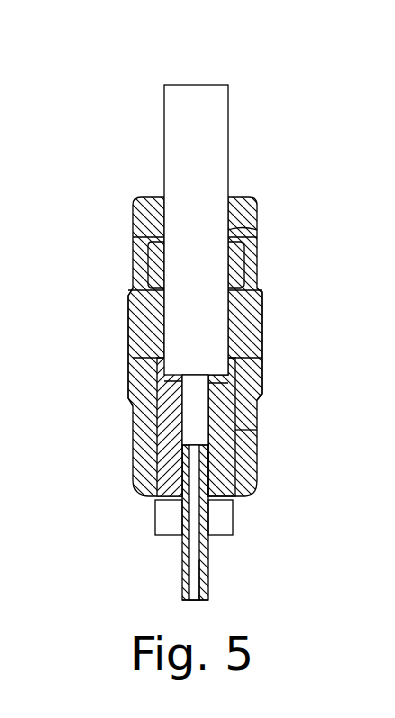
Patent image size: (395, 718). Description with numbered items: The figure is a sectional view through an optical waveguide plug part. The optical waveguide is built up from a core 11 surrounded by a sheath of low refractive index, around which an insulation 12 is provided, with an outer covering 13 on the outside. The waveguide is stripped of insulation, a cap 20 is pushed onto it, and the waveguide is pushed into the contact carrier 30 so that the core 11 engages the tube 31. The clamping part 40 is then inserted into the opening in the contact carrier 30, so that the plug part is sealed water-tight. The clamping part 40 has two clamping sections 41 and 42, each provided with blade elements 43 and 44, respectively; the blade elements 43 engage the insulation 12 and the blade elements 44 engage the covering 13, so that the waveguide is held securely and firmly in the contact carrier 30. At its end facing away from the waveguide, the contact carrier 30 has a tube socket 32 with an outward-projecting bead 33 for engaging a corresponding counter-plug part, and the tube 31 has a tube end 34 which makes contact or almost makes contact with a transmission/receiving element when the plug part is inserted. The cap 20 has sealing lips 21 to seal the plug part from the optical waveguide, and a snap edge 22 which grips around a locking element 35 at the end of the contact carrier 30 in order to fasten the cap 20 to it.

The core 11 is at (142, 480).
The insulation 12 is at (192, 411).
The covering 13 is at (186, 133).
The cap 20 is at (134, 211).
The sealing lips 21 is at (240, 235).
The snap edge 22 is at (240, 272).
The contact carrier 30 is at (138, 300).
The tube 31 is at (182, 566).
The tube socket 32 is at (156, 502).
The outward-projecting bead 33 is at (233, 521).
The tube end 34 is at (208, 595).
The locking element 35 is at (147, 258).
The clamping part 40 is at (258, 398).
The first clamping section 41 is at (258, 360).
The second clamping section 42 is at (170, 437).
The blade elements 43 is at (270, 341).
The blade elements 44 is at (250, 432).